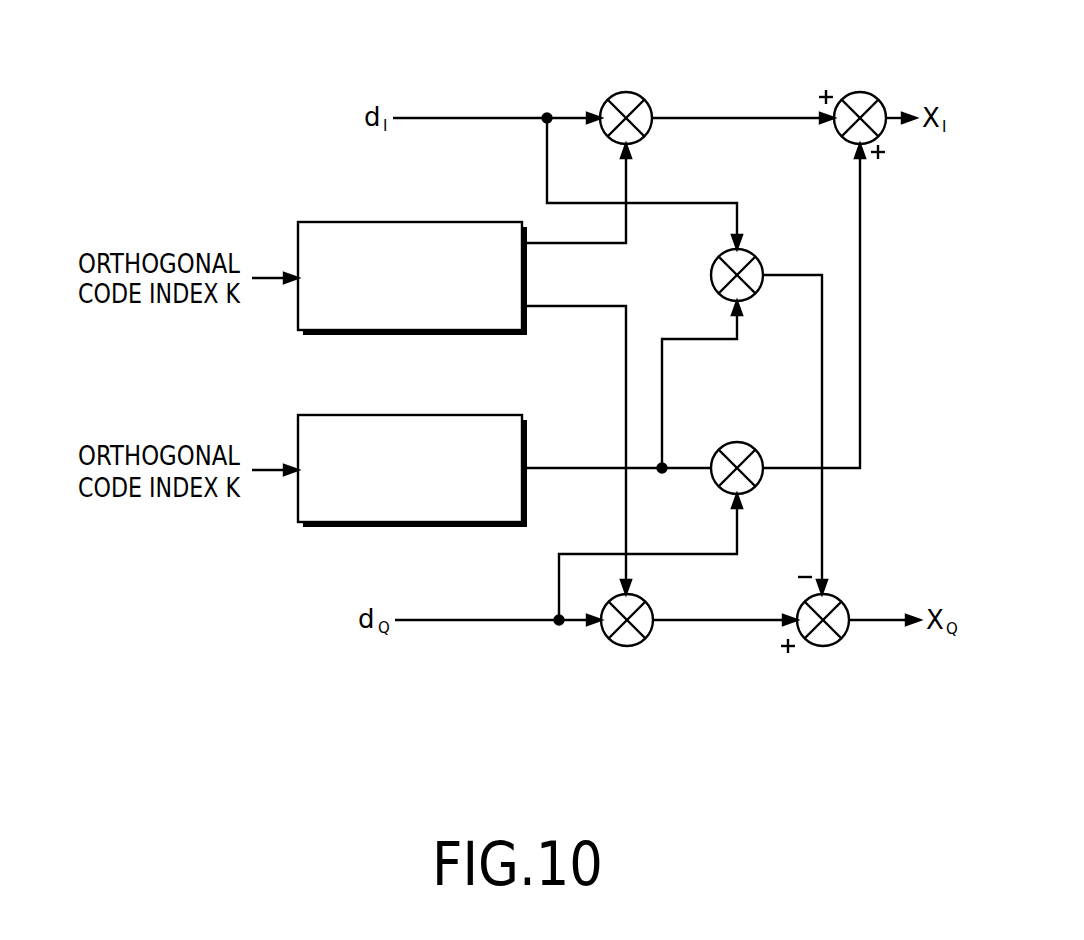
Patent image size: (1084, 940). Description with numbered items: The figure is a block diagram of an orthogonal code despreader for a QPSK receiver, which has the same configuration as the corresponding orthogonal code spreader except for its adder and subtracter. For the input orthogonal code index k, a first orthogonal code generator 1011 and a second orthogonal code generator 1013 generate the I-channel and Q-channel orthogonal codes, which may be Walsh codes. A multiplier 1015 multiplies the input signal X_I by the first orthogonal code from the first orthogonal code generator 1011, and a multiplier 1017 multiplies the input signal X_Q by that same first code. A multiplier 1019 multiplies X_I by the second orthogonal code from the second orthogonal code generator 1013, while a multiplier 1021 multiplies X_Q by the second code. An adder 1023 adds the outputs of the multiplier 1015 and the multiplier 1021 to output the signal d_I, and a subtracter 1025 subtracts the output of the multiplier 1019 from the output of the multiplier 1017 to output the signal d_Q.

The first orthogonal code generator 1011 is at (408, 222).
The second orthogonal code generator 1013 is at (408, 415).
The multiplier 1015 is at (625, 92).
The multiplier 1017 is at (627, 646).
The multiplier 1019 is at (711, 275).
The multiplier 1021 is at (737, 442).
The adder 1023 is at (859, 92).
The subtracter 1025 is at (823, 646).